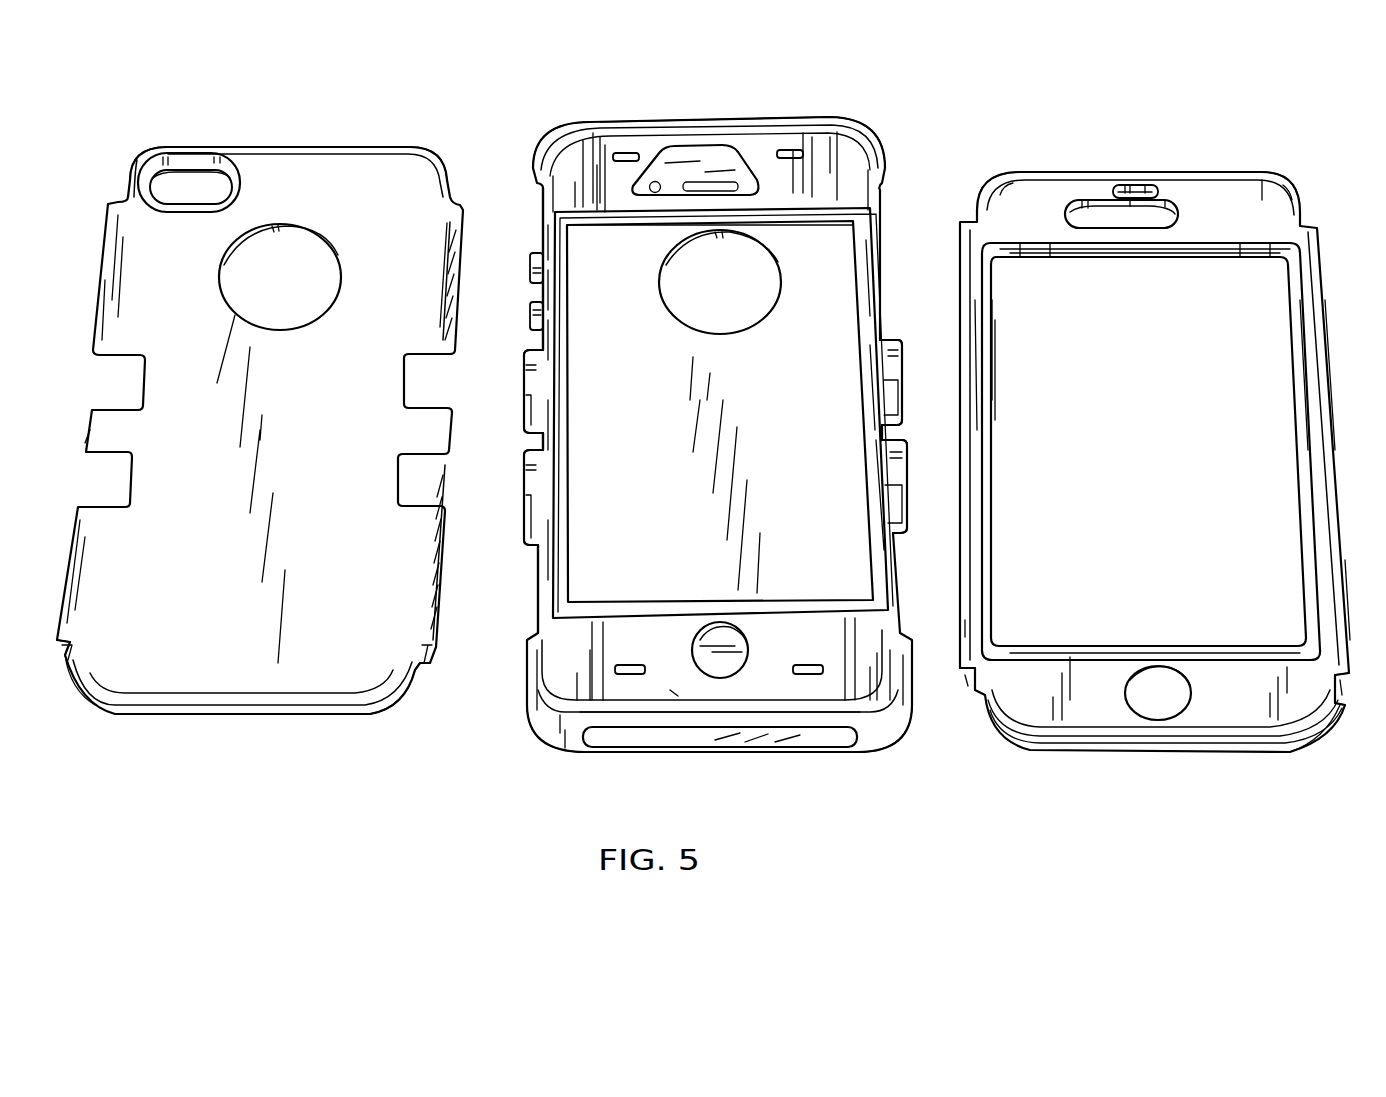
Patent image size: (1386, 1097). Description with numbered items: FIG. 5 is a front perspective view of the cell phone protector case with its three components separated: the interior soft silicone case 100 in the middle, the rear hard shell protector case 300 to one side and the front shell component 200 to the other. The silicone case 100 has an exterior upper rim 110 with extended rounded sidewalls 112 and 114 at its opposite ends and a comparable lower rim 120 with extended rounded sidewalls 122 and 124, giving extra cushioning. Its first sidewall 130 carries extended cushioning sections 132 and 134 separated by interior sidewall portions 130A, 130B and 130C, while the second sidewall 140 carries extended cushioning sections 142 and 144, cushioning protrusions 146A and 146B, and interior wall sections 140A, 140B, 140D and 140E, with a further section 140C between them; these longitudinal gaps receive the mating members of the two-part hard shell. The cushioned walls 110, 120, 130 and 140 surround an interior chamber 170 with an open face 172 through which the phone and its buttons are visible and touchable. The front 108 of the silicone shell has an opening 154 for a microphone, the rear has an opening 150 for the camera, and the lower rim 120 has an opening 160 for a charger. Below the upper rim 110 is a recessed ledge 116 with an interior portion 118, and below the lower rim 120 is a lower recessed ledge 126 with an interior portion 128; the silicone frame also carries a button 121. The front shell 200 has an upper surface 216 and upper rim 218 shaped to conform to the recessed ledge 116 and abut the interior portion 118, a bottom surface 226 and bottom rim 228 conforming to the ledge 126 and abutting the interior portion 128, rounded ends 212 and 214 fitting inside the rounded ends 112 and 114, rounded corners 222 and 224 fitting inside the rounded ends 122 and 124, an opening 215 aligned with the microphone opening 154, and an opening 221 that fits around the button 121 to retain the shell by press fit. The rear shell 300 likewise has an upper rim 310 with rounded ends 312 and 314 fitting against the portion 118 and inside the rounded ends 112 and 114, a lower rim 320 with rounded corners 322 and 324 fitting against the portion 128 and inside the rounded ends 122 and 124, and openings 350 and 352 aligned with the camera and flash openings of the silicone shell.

The interior silicone case 100 is at (762, 88).
The front 108 is at (792, 150).
The exterior upper rim 110 is at (677, 120).
The extended rounded sidewall 112 is at (865, 122).
The extended rounded sidewall 114 is at (548, 137).
The recessed ledge 116 is at (597, 170).
The interior portion 118 is at (636, 140).
The lower rim 120 is at (762, 720).
The button 121 is at (722, 667).
The extended rounded sidewall 122 is at (893, 713).
The extended rounded sidewall 124 is at (548, 723).
The lower recessed ledge 126 is at (822, 687).
The interior portion 128 is at (673, 690).
The first sidewall 130 is at (878, 278).
The interior sidewall portion 130A is at (875, 316).
The interior sidewall portion 130B is at (862, 427).
The interior sidewall portion 130C is at (885, 545).
The extended cushioning section 132 is at (876, 365).
The extended cushioning section 134 is at (880, 470).
The second sidewall 140 is at (532, 600).
The interior wall section 140A is at (557, 237).
The interior wall section 140B is at (542, 288).
The side wall segment 140C is at (545, 342).
The interior wall section 140D is at (543, 428).
The interior wall section 140E is at (538, 553).
The extended cushioning section 142 is at (540, 413).
The extended cushioning section 144 is at (527, 497).
The cushioning protrusion 146A is at (540, 250).
The cushioning protrusion 146B is at (540, 330).
The camera opening 150 is at (740, 323).
The microphone opening 154 is at (723, 180).
The charger opening 160 is at (625, 740).
The interior chamber 170 is at (848, 236).
The open face 172 is at (833, 263).
The front shell component 200 is at (1210, 139).
The rounded end 212 is at (1290, 190).
The rounded end 214 is at (990, 177).
The microphone opening 215 is at (1093, 220).
The upper surface 216 is at (1267, 203).
The upper rim 218 is at (1160, 174).
The button opening 221 is at (1150, 710).
The rounded corner 222 is at (1330, 733).
The rounded corner 224 is at (1000, 733).
The bottom surface 226 is at (1273, 720).
The bottom rim 228 is at (1207, 743).
The rear hard shell protector case 300 is at (327, 84).
The upper rim 310 is at (287, 143).
The rounded end 312 is at (436, 146).
The rounded end 314 is at (143, 151).
The lower rim 320 is at (157, 703).
The rounded corner 322 is at (378, 708).
The rounded corner 324 is at (86, 710).
The camera opening 350 is at (323, 257).
The flash opening 352 is at (213, 180).